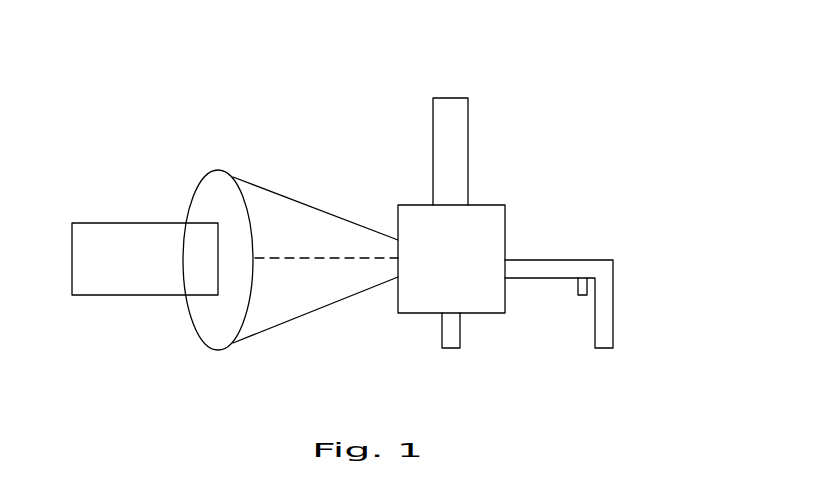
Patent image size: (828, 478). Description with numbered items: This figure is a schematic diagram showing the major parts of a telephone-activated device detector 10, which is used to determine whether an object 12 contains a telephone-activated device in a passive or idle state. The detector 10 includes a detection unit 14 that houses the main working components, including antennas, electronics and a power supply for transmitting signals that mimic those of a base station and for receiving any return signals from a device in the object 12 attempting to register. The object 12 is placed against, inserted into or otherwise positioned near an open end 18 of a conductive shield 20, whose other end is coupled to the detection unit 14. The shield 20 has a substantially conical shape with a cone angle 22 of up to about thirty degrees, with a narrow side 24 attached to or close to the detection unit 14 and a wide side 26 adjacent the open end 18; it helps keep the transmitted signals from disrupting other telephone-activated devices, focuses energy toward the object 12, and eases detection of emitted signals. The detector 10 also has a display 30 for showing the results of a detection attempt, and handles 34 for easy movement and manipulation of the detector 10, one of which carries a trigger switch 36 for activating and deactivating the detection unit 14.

The detector 10 is at (168, 142).
The object 12 is at (90, 223).
The detection unit 14 is at (500, 205).
The open end 18 is at (201, 241).
The conductive shield 20 is at (319, 240).
The cone angle 22 is at (325, 262).
The narrow side 24 is at (352, 220).
The wide side 26 is at (240, 175).
The display 30 is at (455, 98).
The handles 34 is at (455, 348).
The trigger switch 36 is at (585, 281).